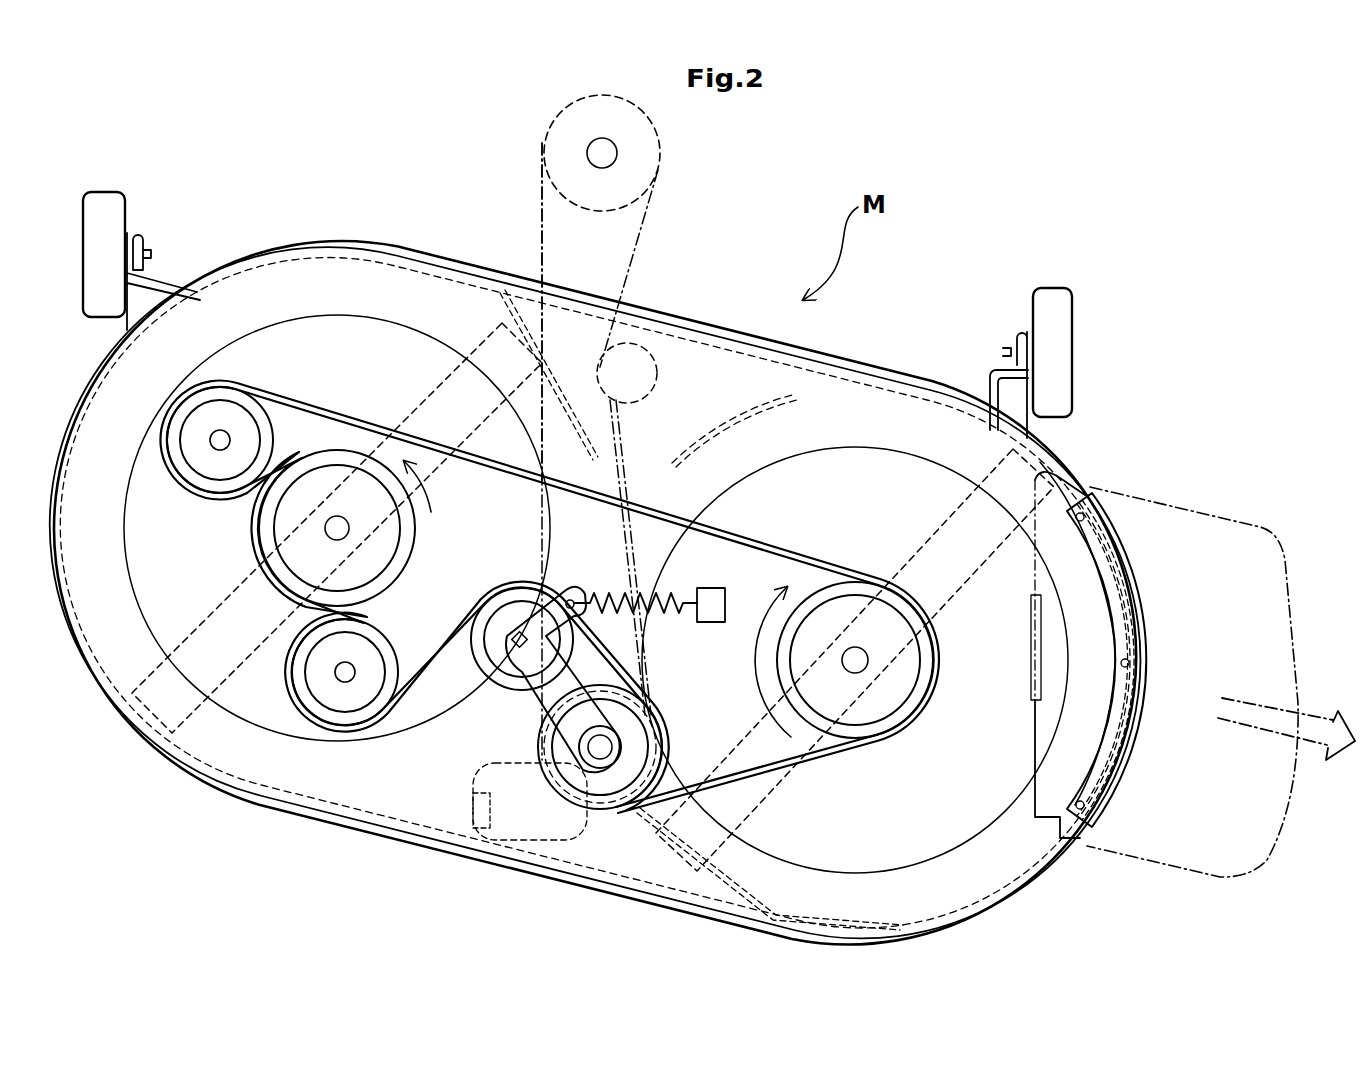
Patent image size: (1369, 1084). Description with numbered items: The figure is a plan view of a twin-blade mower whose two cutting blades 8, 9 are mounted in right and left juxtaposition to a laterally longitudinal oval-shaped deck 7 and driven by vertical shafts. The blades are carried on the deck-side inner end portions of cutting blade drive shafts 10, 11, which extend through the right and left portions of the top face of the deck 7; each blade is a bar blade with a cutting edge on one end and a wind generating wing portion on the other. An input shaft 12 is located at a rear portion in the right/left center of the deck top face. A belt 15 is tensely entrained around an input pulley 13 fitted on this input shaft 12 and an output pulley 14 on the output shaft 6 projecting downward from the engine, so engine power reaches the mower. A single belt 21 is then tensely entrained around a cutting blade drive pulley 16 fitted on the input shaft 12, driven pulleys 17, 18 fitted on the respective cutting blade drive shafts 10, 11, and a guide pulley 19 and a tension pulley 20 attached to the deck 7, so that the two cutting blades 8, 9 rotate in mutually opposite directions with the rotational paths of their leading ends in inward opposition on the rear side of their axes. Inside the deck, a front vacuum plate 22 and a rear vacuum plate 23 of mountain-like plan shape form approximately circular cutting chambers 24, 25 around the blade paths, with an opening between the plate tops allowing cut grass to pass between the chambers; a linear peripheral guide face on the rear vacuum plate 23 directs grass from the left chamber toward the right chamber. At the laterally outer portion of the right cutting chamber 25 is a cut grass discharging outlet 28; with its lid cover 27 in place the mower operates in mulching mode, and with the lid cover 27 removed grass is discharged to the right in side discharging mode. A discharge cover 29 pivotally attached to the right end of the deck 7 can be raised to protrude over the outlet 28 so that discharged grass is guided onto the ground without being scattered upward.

The output shaft 6 is at (617, 150).
The deck 7 is at (352, 268).
The cutting blade 8 is at (415, 402).
The cutting blade 9 is at (930, 545).
The cutting blade drive shaft 10 is at (337, 528).
The cutting blade drive shaft 11 is at (870, 660).
The input shaft 12 is at (605, 768).
The input pulley 13 is at (643, 660).
The transmission belt 14 is at (553, 118).
The belt 15 is at (540, 248).
The cutting blade drive pulley 16 is at (673, 733).
The driven pulley 17 is at (300, 565).
The driven pulley 18 is at (873, 713).
The guide pulley 19 is at (182, 417).
The tension pulley 20 is at (508, 670).
The belt 21 is at (745, 540).
The front vacuum plate 22 is at (733, 415).
The rear vacuum plate 23 is at (437, 820).
The cutting chamber 24 is at (273, 365).
The cutting chamber 25 is at (930, 452).
The lid cover 27 is at (1147, 693).
The cut grass discharging outlet 28 is at (1122, 795).
The discharge cover 29 is at (1180, 507).